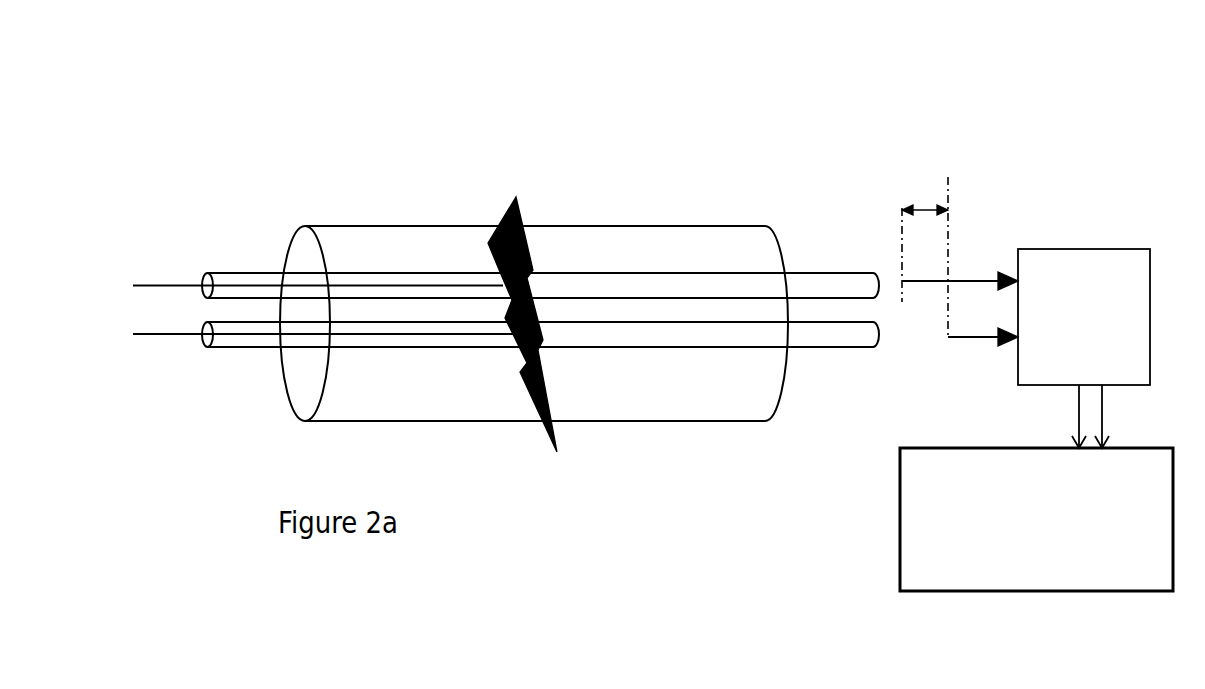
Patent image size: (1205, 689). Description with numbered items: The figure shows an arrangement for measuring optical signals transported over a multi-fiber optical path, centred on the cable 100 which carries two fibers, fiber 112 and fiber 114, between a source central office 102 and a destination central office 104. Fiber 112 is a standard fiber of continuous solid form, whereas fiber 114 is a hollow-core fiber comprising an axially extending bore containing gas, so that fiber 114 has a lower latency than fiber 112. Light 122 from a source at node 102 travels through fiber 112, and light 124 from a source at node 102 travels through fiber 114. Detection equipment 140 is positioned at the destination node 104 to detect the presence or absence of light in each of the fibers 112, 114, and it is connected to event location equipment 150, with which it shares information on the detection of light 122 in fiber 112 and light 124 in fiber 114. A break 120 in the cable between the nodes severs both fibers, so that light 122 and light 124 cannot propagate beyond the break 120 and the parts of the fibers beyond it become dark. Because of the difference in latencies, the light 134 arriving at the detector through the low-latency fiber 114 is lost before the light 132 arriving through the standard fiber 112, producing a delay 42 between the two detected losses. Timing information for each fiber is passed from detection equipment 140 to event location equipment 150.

The cable 100 is at (377, 233).
The central office 102 is at (189, 112).
The central office 104 is at (898, 65).
The fiber 112 is at (260, 280).
The fiber 114 is at (260, 348).
The break 120 is at (598, 492).
The light 122 is at (147, 278).
The light 124 is at (153, 337).
The light 132 is at (958, 278).
The light 134 is at (971, 338).
The delay 42 is at (933, 209).
The detection equipment 140 is at (1105, 346).
The event location equipment 150 is at (1050, 566).